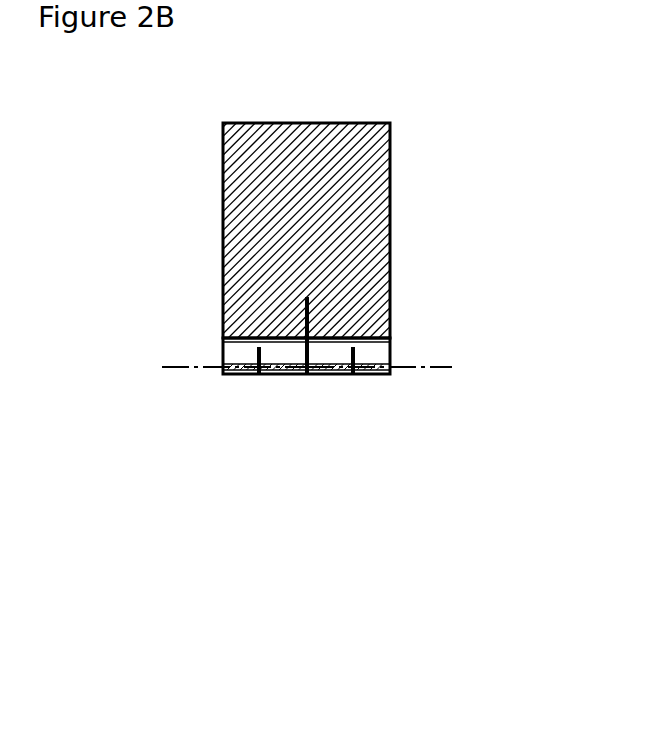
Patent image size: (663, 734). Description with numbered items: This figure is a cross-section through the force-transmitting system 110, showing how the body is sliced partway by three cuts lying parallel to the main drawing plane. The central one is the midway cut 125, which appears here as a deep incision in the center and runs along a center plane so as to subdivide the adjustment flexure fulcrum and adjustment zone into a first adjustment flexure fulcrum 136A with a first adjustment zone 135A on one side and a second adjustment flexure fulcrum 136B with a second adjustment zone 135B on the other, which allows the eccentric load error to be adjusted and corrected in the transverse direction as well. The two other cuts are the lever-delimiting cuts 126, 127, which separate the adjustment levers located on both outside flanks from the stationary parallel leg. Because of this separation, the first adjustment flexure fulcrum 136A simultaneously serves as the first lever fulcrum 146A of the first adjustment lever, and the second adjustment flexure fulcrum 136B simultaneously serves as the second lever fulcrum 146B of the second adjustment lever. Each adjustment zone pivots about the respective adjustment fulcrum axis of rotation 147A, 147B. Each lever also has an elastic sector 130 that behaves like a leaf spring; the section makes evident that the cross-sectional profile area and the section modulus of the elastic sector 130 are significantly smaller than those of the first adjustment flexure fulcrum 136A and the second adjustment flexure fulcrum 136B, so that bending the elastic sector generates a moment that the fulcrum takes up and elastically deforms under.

The force-transmitting system 110 is at (357, 155).
The elastic sector 130 is at (222, 373).
The first adjustment zone 135A is at (240, 347).
The second adjustment zone 135B is at (372, 350).
The adjustment fulcrum axis of rotation 147A is at (162, 368).
The adjustment fulcrum axis of rotation 147B is at (452, 368).
The first adjustment flexure fulcrum 136A is at (270, 374).
The first lever fulcrum 146A is at (290, 375).
The second lever fulcrum 146B is at (325, 375).
The second adjustment flexure fulcrum 136B is at (352, 374).
The midway cut 125 is at (306, 390).
The lever-delimiting cut 126 is at (251, 390).
The lever-delimiting cut 127 is at (362, 390).